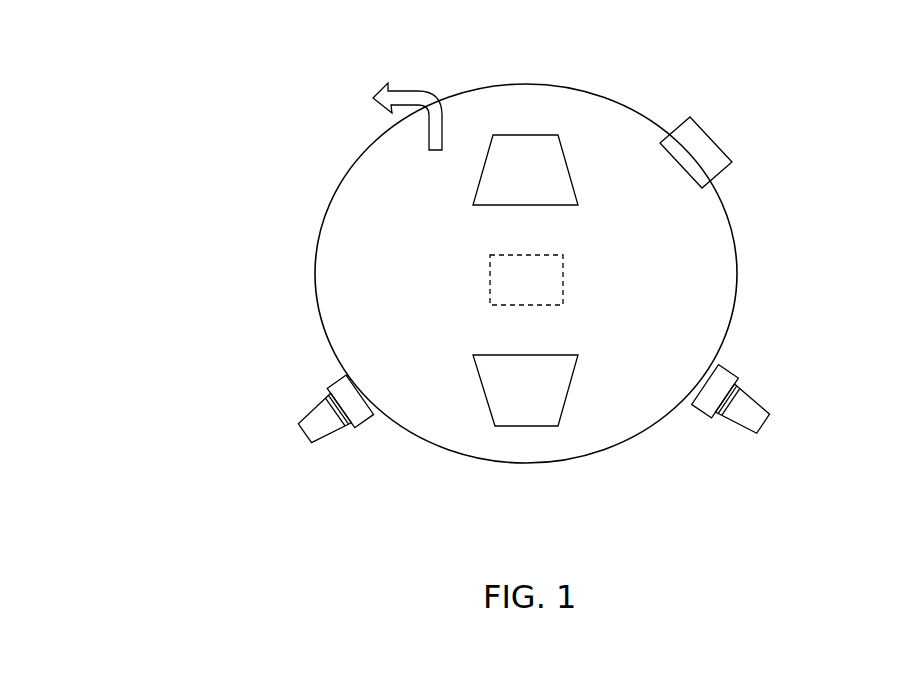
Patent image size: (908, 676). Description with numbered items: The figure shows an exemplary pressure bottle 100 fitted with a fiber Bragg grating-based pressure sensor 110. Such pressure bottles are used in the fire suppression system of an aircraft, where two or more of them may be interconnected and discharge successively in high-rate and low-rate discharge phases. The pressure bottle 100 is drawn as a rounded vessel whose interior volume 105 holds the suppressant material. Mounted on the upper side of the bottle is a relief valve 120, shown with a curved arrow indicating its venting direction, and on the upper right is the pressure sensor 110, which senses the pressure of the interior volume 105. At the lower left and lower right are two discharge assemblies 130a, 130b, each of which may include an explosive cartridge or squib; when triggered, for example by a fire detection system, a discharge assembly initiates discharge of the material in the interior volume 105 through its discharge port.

The pressure bottle 100 is at (184, 71).
The interior volume 105 is at (550, 294).
The FBG-based pressure sensor 110 is at (690, 130).
The relief valve 120 is at (366, 67).
The discharge assembly 130a is at (271, 416).
The discharge assembly 130b is at (786, 401).